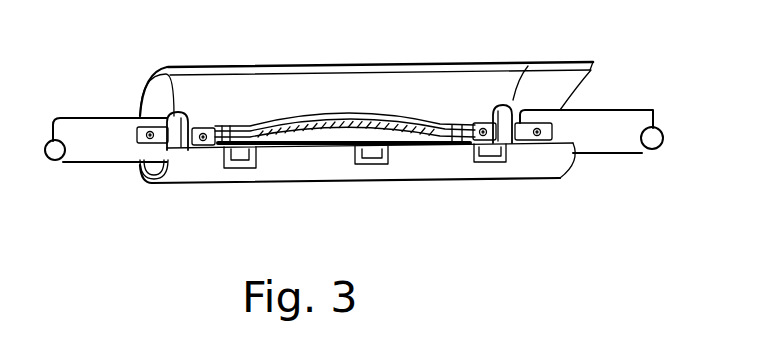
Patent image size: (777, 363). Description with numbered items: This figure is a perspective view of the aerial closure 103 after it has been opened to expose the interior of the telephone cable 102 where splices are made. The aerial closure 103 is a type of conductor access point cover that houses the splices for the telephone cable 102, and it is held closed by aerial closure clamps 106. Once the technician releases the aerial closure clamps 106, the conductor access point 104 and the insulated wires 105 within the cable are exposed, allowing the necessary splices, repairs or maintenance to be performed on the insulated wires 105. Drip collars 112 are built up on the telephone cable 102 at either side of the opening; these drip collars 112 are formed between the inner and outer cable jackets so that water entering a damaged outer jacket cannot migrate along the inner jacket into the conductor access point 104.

The telephone cable 102 is at (613, 118).
The aerial closure 103 is at (543, 158).
The conductor access point 104 is at (250, 115).
The insulated wires 105 is at (397, 146).
The aerial closure clamps 106 is at (233, 168).
The drip collars 112 is at (174, 108).